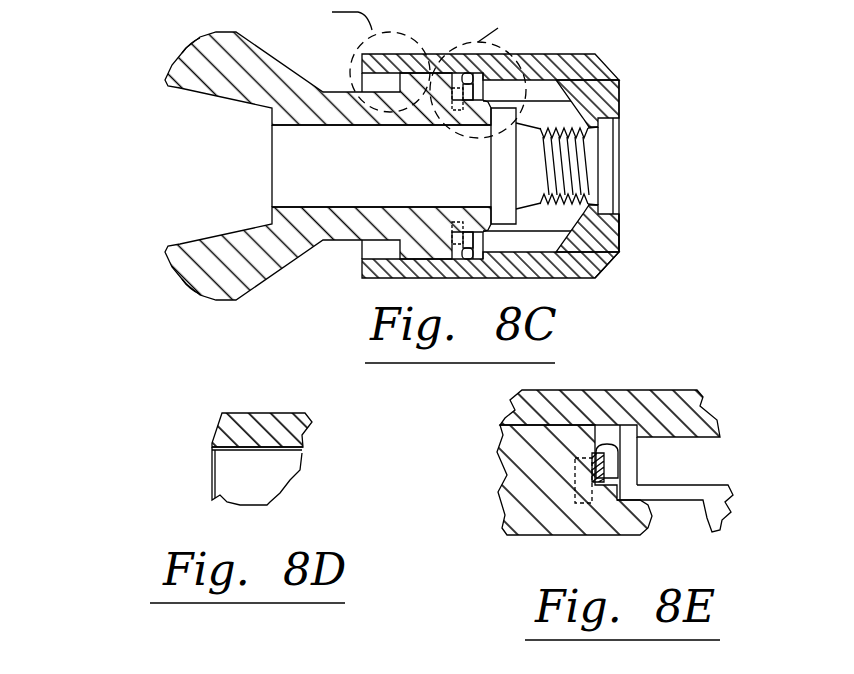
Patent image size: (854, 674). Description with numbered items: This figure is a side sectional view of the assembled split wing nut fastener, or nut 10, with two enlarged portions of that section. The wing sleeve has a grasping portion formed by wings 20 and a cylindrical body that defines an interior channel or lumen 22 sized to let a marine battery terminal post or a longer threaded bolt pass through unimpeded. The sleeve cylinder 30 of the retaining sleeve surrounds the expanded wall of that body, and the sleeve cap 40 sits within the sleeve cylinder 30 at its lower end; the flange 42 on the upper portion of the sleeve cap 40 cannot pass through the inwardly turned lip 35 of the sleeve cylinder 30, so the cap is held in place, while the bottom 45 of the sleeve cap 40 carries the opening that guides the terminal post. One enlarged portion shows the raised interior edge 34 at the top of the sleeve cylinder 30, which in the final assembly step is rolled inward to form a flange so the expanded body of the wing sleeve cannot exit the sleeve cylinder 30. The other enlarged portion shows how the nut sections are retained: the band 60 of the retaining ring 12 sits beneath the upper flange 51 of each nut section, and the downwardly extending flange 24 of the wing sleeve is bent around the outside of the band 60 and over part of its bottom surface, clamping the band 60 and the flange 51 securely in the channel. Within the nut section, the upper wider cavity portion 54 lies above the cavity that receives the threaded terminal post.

In FIG. 8C, the nut 10 is at (126, 153).
In FIG. 8C, the retaining ring 12 is at (460, 252).
In FIG. 8C, the wings 20 is at (204, 241).
In FIG. 8C, the interior channel or lumen 22 is at (262, 141).
In FIG. 8E, the downwardly extending flange 24 is at (616, 469).
In FIG. 8C, the sleeve cylinder 30 is at (552, 55).
In FIG. 8D, the sleeve cylinder 30 is at (277, 413).
In FIG. 8D, the raised interior edge 34 is at (206, 445).
In FIG. 8C, the inwardly turned lip 35 is at (565, 82).
In FIG. 8C, the sleeve cap 40 is at (612, 265).
In FIG. 8C, the flange 42 is at (585, 75).
In FIG. 8C, the bottom 45 is at (622, 233).
In FIG. 8E, the upper flange 51 is at (576, 482).
In FIG. 8C, the upper wider cavity portion 54 is at (360, 75).
In FIG. 8E, the band 60 is at (606, 476).